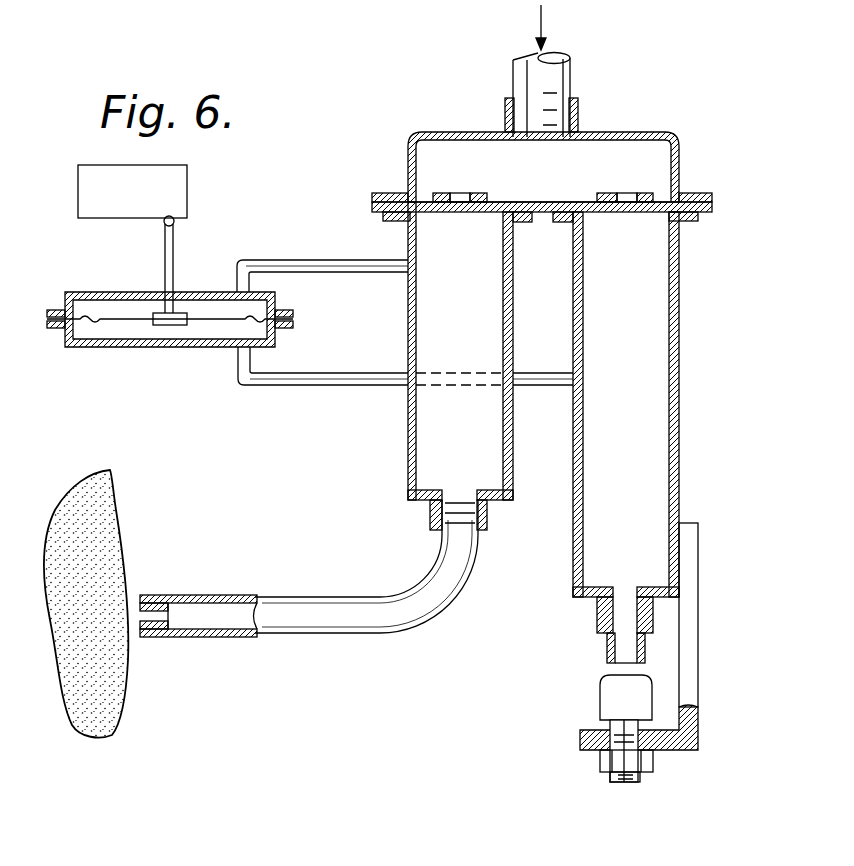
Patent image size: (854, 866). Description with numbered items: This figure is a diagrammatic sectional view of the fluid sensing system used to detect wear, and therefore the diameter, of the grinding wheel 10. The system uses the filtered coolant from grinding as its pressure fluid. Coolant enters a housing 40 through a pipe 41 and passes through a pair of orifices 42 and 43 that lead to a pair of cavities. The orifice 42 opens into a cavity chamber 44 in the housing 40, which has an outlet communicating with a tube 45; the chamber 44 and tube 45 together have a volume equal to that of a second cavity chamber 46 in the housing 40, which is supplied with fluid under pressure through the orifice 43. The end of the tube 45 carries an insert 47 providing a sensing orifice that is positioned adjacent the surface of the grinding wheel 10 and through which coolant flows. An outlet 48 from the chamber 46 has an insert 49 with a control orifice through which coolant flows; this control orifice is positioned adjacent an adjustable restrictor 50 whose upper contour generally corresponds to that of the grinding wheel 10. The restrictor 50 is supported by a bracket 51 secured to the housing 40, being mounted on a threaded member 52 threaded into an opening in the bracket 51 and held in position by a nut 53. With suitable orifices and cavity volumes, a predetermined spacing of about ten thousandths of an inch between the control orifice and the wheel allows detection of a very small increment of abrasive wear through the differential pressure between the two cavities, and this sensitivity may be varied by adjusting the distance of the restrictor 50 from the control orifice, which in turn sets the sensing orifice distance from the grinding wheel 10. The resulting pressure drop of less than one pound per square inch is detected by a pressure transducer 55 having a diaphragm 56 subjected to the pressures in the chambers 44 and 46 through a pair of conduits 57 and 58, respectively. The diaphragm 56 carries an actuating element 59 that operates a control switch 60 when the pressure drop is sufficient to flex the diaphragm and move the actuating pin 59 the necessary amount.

The grinding wheel 10 is at (110, 532).
The housing 40 is at (689, 181).
The pipe 41 is at (558, 73).
The orifice 42 is at (460, 200).
The orifice 43 is at (625, 200).
The cavity chamber 44 is at (470, 450).
The tube 45 is at (363, 625).
The second cavity chamber 46 is at (640, 480).
The insert 47 is at (155, 617).
The outlet 48 is at (608, 627).
The insert 49 is at (627, 653).
The adjustable restrictor 50 is at (613, 707).
The bracket 51 is at (690, 603).
The threaded member 52 is at (635, 780).
The nut 53 is at (610, 763).
The pressure transducer 55 is at (75, 347).
The diaphragm 56 is at (210, 323).
The conduit 57 is at (318, 262).
The conduit 58 is at (330, 382).
The actuating element 59 is at (172, 258).
The control switch 60 is at (175, 215).